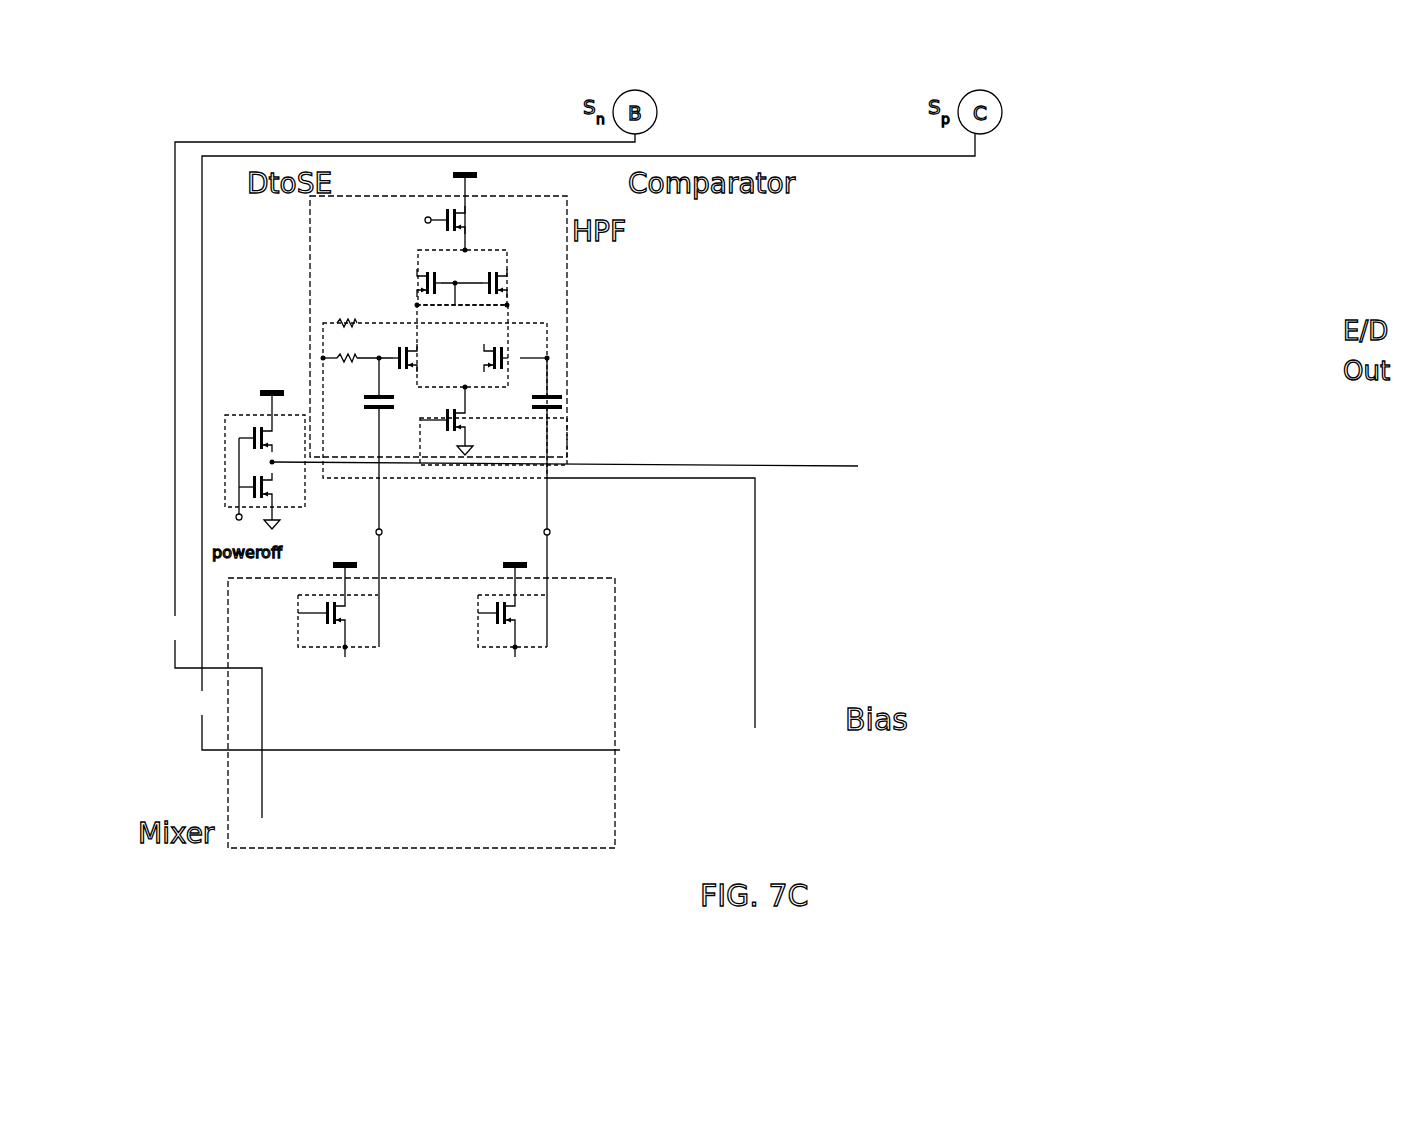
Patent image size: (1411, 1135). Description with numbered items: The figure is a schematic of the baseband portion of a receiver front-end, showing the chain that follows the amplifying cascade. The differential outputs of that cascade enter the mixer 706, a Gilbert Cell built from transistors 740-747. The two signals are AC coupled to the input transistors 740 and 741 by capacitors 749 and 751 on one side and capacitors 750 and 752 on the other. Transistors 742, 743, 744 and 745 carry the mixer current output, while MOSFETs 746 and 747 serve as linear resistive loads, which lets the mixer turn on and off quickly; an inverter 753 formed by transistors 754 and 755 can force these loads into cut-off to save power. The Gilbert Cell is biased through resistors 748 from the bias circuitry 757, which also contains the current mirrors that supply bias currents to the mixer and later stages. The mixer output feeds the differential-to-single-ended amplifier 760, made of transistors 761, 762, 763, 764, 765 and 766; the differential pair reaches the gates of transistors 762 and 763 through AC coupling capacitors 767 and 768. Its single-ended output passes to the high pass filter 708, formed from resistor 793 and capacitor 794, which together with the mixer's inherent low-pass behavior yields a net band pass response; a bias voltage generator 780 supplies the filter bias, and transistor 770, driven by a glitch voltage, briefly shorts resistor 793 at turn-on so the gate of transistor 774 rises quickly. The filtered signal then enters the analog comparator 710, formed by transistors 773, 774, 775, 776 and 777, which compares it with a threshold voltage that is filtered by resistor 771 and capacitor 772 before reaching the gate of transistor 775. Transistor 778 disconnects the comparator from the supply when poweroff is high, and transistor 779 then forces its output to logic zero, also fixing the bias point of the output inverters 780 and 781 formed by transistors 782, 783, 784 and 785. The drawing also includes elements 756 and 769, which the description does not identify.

The mixer 706 is at (600, 848).
The high pass filter 708 is at (690, 335).
The analog comparator 710 is at (908, 168).
The transistor MG1 740 is at (310, 830).
The transistor MG2 741 is at (505, 830).
The transistor MG3 742 is at (285, 675).
The transistor MG4 743 is at (407, 698).
The transistor MG5 744 is at (452, 698).
The transistor MG6 745 is at (590, 670).
The MOSFET MG7 746 is at (318, 610).
The MOSFET MG8 747 is at (741, 507).
The resistors RBG 748 is at (655, 815).
The capacitor CD1 749 is at (170, 650).
The capacitor CD1 750 is at (190, 725).
The capacitor CD2 751 is at (245, 790).
The capacitor CD2 752 is at (420, 835).
The inverter 753 is at (262, 413).
The transistor M11 754 is at (245, 438).
The transistor M12 755 is at (245, 490).
The capacitor CB 756 is at (1182, 630).
The bias circuitry 757 is at (1275, 705).
The differential-to-single-ended amplifier circuit 760 is at (310, 240).
The transistor MD1 761 is at (470, 440).
The transistor MD2 762 is at (535, 352).
The transistor MD3 763 is at (410, 356).
The transistor MD4 764 is at (505, 276).
The transistor MD5 765 is at (428, 278).
The transistor MD6 766 is at (468, 210).
The AC coupling capacitor 767 is at (552, 398).
The AC coupling capacitor 768 is at (376, 412).
The resistor 769 is at (346, 316).
The transistor M8 770 is at (756, 258).
The resistor RBIG 771 is at (1075, 195).
The capacitor CBIG 772 is at (1062, 258).
The transistor MC1 773 is at (925, 440).
The transistor MC2 774 is at (855, 375).
The transistor MC3 775 is at (972, 357).
The transistor MC4 776 is at (880, 278).
The transistor MC5 777 is at (963, 265).
The transistor MP3 778 is at (890, 212).
The transistor MP2 779 is at (1055, 405).
The bias voltage generator 780 is at (740, 685).
The inverter 781 is at (1240, 275).
The transistor MR1 782 is at (1160, 410).
The transistor MR2 783 is at (1155, 293).
The transistor MR3 784 is at (1242, 410).
The transistor MR4 785 is at (1238, 293).
The resistor RF 793 is at (694, 262).
The capacitor CF 794 is at (655, 306).